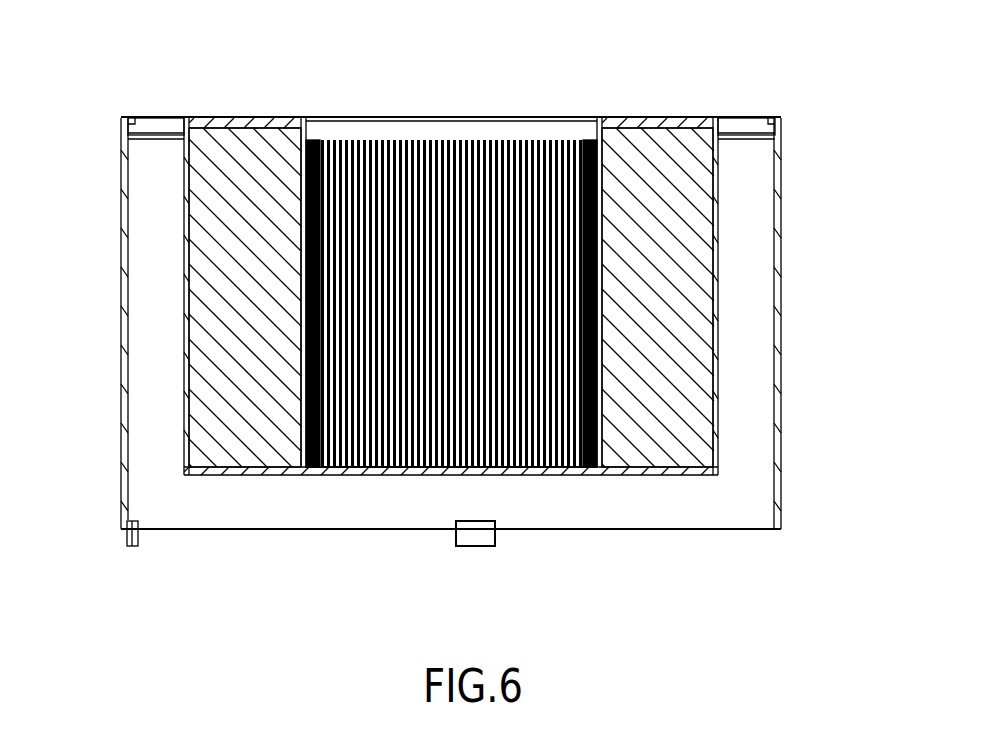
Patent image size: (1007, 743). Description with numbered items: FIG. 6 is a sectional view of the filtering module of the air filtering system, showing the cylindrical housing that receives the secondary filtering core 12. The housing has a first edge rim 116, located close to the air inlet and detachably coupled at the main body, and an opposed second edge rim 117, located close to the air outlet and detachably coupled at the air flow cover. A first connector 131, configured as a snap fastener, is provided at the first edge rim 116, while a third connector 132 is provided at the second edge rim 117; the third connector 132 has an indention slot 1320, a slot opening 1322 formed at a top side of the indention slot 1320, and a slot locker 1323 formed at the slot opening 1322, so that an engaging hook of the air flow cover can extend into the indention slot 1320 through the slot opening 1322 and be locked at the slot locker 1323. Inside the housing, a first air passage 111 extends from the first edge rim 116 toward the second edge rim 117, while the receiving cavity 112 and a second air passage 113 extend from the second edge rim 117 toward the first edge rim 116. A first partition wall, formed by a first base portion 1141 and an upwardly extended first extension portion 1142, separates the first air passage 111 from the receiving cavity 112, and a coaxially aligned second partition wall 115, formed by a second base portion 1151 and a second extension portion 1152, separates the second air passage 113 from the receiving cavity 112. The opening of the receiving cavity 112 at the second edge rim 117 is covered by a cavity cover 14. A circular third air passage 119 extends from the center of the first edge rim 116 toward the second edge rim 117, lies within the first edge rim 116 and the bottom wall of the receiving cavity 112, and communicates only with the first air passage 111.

The first air passage 111 is at (159, 410).
The receiving cavity 112 is at (190, 410).
The second air passage 113 is at (421, 405).
The second partition wall 115 is at (305, 440).
The first edge rim 116 is at (784, 530).
The second edge rim 117 is at (784, 119).
The third air passage 119 is at (512, 498).
The secondary filtering core 12 is at (244, 405).
The first connector 131 is at (132, 546).
The third connector 132 is at (200, 45).
The indention slot 1320 is at (172, 129).
The slot opening 1322 is at (146, 117).
The slot locker 1323 is at (127, 118).
The cavity cover 14 is at (655, 120).
The first base portion 1141 is at (365, 478).
The first extension portion 1142 is at (183, 307).
The second base portion 1151 is at (553, 470).
The second extension portion 1152 is at (300, 235).